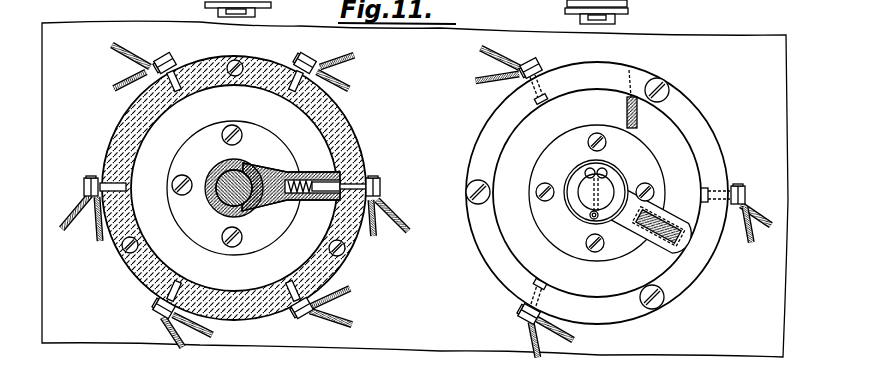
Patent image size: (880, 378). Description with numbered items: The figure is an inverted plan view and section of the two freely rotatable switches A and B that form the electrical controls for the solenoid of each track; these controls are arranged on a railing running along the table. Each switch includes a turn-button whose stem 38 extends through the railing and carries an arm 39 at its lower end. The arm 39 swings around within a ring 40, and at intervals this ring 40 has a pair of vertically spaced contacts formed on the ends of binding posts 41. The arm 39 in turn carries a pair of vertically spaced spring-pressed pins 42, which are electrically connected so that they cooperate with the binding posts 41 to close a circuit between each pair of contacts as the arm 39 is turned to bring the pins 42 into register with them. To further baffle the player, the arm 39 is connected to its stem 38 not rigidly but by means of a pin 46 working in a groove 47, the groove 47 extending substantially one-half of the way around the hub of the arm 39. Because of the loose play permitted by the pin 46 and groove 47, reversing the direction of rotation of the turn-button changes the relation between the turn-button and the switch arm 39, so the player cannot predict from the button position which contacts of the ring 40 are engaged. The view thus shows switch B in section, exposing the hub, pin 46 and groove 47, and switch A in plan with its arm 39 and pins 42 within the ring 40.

The switch A is at (695, 123).
The switch B is at (118, 126).
The stem 38 is at (236, 208).
The arm 39 is at (262, 175).
The ring 40 is at (337, 266).
The binding posts 41 is at (517, 318).
The spring-pressed pins 42 is at (320, 195).
The pin 46 is at (215, 190).
The groove 47 is at (414, 188).